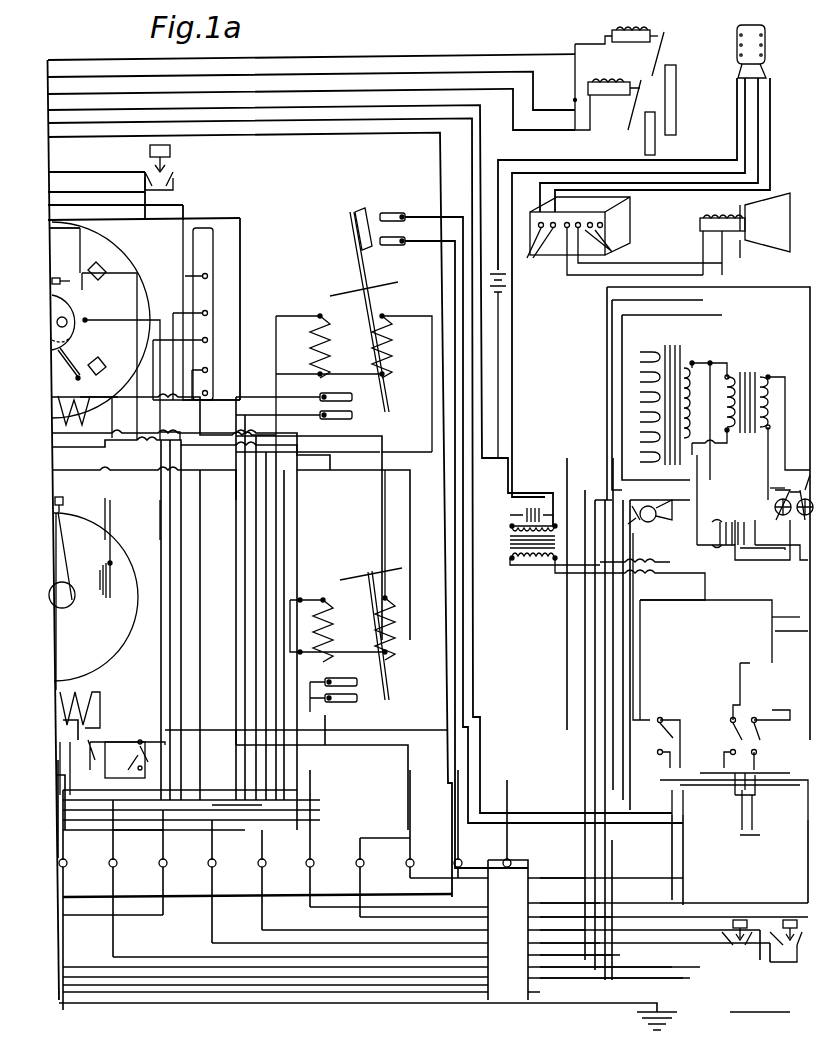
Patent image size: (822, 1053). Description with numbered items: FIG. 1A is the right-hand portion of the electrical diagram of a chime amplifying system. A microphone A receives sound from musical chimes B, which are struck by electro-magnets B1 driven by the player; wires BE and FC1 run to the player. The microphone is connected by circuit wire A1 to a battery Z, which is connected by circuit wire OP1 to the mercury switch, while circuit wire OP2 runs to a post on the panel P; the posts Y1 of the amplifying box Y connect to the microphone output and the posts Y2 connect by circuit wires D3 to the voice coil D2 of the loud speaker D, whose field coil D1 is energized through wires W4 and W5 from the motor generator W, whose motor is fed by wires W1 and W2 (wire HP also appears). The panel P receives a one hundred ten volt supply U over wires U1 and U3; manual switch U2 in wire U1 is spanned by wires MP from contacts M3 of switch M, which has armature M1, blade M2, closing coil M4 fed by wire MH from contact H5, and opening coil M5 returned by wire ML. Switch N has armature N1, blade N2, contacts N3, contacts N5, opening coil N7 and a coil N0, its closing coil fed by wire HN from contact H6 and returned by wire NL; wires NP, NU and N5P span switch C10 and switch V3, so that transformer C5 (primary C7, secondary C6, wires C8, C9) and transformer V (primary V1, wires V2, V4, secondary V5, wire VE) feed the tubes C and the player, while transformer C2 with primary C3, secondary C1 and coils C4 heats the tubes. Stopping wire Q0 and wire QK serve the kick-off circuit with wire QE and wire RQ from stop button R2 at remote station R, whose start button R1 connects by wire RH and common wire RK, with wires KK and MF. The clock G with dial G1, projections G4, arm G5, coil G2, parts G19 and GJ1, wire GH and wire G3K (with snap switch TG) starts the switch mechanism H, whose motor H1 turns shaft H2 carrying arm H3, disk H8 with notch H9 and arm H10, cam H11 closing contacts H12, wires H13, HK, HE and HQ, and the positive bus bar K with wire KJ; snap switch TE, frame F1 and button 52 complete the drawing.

The microphone A is at (762, 30).
The circuit wire A1 is at (735, 128).
The musical chimes B is at (672, 100).
The electro-magnets B1 is at (625, 32).
The box Y is at (630, 218).
The posts Y1 is at (532, 252).
The posts Y2 is at (644, 251).
The battery Z is at (494, 366).
The loud speaker D is at (790, 222).
The field coil D1 is at (708, 217).
The coil D2 is at (751, 209).
The circuit wires D3 is at (742, 262).
The circuit wire OP1 is at (545, 318).
The circuit wire OP2 is at (612, 173).
The circuit wire W4 is at (625, 348).
The circuit wire W5 is at (612, 334).
The conductor HP is at (555, 375).
The secondary coils C4 is at (640, 386).
The primary C3 is at (729, 372).
The secondary C1 is at (771, 377).
The transformer C2 is at (718, 441).
The tubes C is at (791, 498).
The high voltage transformer C5 is at (752, 501).
The secondary coil C6 is at (764, 487).
The primary coil C7 is at (727, 499).
The wire U3 is at (697, 552).
The motor generator W is at (650, 522).
The circuit wire W1 is at (635, 569).
The circuit wire W2 is at (640, 598).
The transformer V is at (510, 540).
The secondary coil V5 is at (510, 528).
The primary coil V1 is at (515, 562).
The circuit wire V2 is at (570, 565).
The circuit wire V4 is at (580, 575).
The manual switch V3 is at (670, 735).
The panel P is at (702, 626).
The circuit wire C8 is at (769, 621).
The circuit wire C9 is at (773, 638).
The switch C10 is at (724, 740).
The manual switch U2 is at (770, 720).
The wire U1 is at (734, 795).
The 110 volt A. C. current supply U is at (760, 831).
The circuit wires NU is at (688, 802).
The conductor MF is at (808, 806).
The remote control station R is at (754, 987).
The starting push button switch R1 is at (793, 935).
The stopping push button switch R2 is at (732, 929).
The circuit wire RQ is at (125, 883).
The common circuit wire RK is at (75, 883).
The circuit wire RH is at (80, 995).
The frame F1 is at (362, 158).
The contacts N3 is at (400, 214).
The switch blade N2 is at (352, 232).
The swinging armature N1 is at (335, 297).
The opening coil N7 is at (318, 342).
The resistor N0 is at (390, 348).
The switch N is at (403, 381).
The circuit wire HN is at (432, 400).
The contacts N5 is at (352, 400).
The circuit wire Q0 is at (282, 480).
The circuit wire NL is at (296, 492).
The circuit wires N5P is at (270, 545).
The wire MH is at (392, 548).
The swinging armature M1 is at (348, 578).
The switch blade M2 is at (390, 682).
The opening coil M5 is at (323, 598).
The closing coil M4 is at (396, 598).
The contacts M3 is at (336, 695).
The circuit wire ML is at (357, 663).
The switch M is at (410, 667).
The wires MP is at (318, 782).
The positive bus bar K is at (215, 288).
The circuit wire KJ is at (178, 186).
The stop button 52 is at (170, 152).
The wire G3K is at (192, 344).
The circuit wire QK is at (192, 430).
The switch mechanism H is at (120, 272).
The conductor HE is at (80, 228).
The contact H5 is at (103, 270).
The circuit closing contacts H12 is at (55, 278).
The rotatable shaft H2 is at (70, 315).
The switch arm H3 is at (54, 308).
The cam H11 is at (57, 322).
The metal contact disk H8 is at (48, 338).
The notch H9 is at (55, 350).
The yielding contact arm H10 is at (77, 364).
The contact H6 is at (99, 357).
The conductor HQ is at (60, 388).
The wire H13 is at (102, 385).
The synchronized motor H1 is at (82, 420).
The wire HK is at (147, 316).
The circuit wire GH is at (100, 520).
The clock G is at (115, 545).
The twenty-four hour dial G1 is at (116, 645).
The dial arm G19 is at (60, 552).
The yielding contact arm G5 is at (55, 497).
The projections G4 is at (58, 515).
The coil G2 is at (91, 709).
The conductor GJ1 is at (92, 720).
The snap switch TG is at (60, 772).
The snap switch TE is at (145, 767).
The circuit wire QE is at (75, 933).
The conductor KK is at (72, 975).
The circuit wires NP is at (512, 820).
The conductor FC1 is at (90, 92).
The conductor BE is at (66, 75).
The circuit wire VE is at (72, 108).